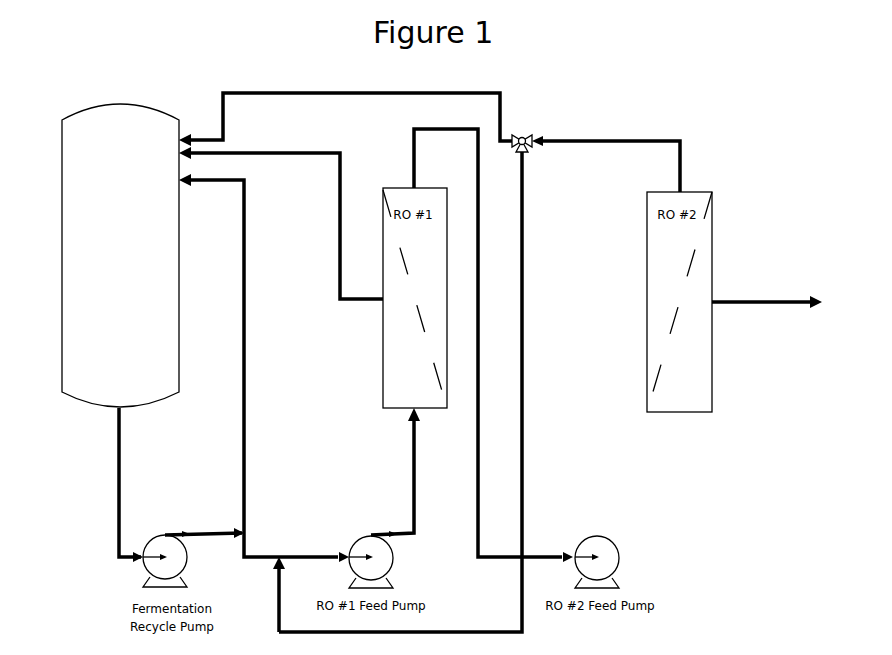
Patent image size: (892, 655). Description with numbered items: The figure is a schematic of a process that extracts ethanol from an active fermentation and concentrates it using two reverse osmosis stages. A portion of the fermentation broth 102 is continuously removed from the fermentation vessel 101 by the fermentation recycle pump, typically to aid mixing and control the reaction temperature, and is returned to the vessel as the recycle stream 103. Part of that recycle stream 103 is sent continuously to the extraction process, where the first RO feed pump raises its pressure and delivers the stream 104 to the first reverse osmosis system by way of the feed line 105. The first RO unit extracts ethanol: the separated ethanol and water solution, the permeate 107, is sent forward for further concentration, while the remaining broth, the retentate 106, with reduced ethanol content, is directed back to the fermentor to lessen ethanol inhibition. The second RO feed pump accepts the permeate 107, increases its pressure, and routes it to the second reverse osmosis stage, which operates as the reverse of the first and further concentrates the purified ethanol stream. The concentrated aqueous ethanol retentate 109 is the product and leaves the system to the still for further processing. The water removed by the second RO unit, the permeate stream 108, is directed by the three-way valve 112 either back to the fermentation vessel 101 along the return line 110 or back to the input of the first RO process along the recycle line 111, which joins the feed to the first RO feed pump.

The fermentation vessel 101 is at (86, 310).
The fermentation broth 102 is at (115, 492).
The recycle stream 103 is at (248, 389).
The stream 104 is at (270, 549).
The RO #1 feed line 105 is at (408, 460).
The retentate 106 is at (335, 245).
The permeate 107 is at (408, 153).
The permeate stream 108 is at (687, 151).
The retentate 109 is at (780, 308).
The permeate return line from valve to vessel 110 is at (506, 102).
The input of the process RO #1 111 is at (526, 375).
The 3-way valve 112 is at (532, 150).